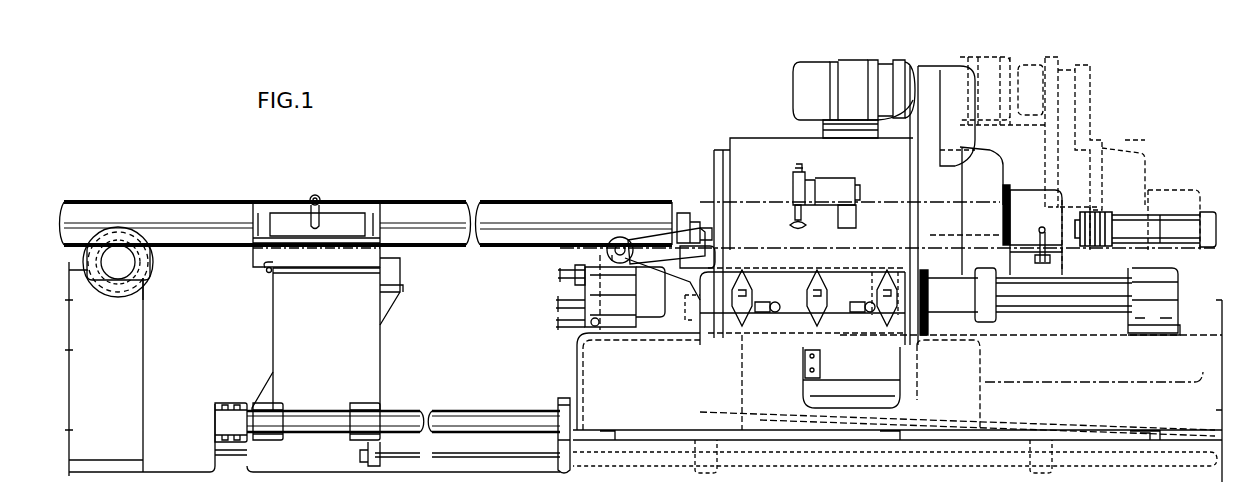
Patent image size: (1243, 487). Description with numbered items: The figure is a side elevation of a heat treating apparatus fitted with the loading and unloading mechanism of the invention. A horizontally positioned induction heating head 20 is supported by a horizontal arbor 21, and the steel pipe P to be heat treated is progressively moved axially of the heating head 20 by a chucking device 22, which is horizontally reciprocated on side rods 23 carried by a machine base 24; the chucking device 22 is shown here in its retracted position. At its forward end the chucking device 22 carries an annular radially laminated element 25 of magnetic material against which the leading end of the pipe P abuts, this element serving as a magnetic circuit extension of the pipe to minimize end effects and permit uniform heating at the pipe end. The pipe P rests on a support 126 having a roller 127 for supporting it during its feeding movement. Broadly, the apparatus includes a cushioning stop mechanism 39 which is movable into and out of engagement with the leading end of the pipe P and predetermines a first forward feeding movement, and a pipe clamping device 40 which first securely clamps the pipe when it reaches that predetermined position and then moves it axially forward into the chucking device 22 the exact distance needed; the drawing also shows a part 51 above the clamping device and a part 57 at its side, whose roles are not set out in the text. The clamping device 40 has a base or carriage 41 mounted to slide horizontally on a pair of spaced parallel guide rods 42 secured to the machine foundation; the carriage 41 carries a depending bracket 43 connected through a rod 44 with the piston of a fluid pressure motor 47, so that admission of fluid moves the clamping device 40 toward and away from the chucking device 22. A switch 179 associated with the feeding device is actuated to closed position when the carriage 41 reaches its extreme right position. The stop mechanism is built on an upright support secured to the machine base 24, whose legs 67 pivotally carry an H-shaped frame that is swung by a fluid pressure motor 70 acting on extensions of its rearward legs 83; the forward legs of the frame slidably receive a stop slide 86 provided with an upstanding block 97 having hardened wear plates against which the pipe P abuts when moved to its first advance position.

The steel pipe P is at (548, 208).
The induction heating head 20 is at (1100, 212).
The horizontal arbor 21 is at (1158, 216).
The chucking device 22 is at (743, 150).
The side rods 23 is at (1088, 311).
The machine base 24 is at (655, 387).
The annular radially laminated element 25 is at (1002, 206).
The cushioning stop mechanism 39 is at (669, 262).
The pipe clamping device 40 is at (272, 325).
The base or carriage 41 is at (272, 355).
The guide rods 42 is at (452, 411).
The depending bracket 43 is at (366, 448).
The rod 44 is at (656, 458).
The fluid pressure motor 47 is at (850, 466).
The clamp pin 51 is at (258, 222).
The bracket 57 is at (392, 280).
The legs 67 is at (624, 283).
The fluid pressure motor 70 is at (584, 305).
The rearward legs 83 is at (648, 238).
The stop slide 86 is at (722, 263).
The upstanding block 97 is at (690, 216).
The support 126 is at (136, 325).
The roller 127 is at (146, 283).
The switch 179 is at (549, 397).